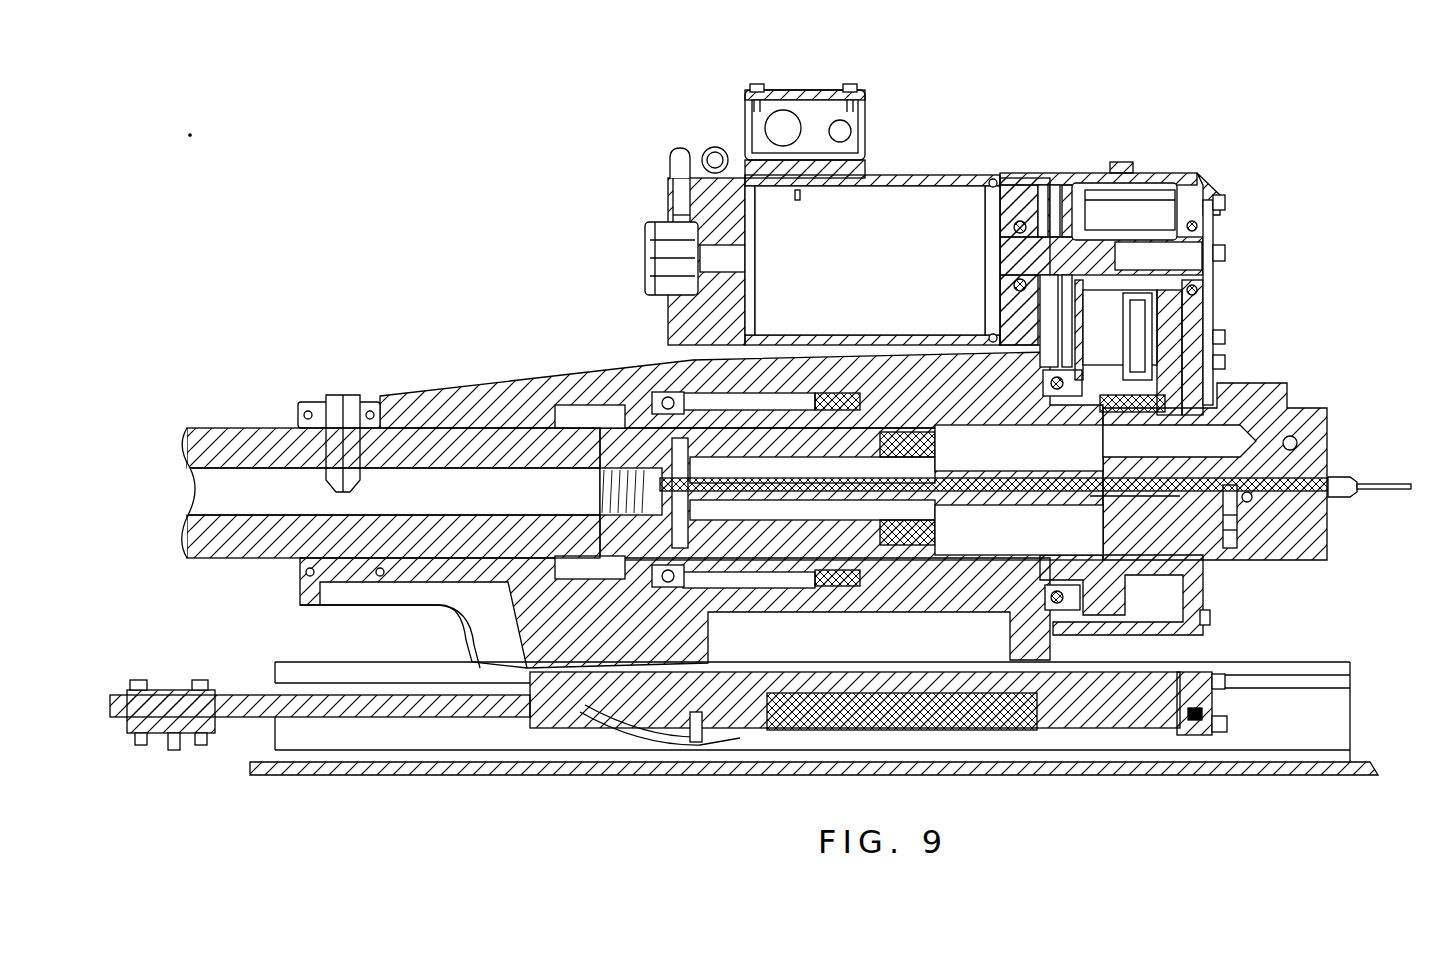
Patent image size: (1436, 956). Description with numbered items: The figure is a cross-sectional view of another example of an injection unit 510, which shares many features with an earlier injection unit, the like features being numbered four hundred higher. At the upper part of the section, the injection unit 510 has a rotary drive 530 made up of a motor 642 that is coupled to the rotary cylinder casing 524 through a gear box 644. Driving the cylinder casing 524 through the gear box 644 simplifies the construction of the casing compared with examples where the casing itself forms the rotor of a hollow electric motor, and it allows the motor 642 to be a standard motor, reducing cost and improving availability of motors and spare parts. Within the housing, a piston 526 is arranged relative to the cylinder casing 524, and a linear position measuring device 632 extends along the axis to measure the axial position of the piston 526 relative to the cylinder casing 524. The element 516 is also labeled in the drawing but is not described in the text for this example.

The injection unit 510 is at (426, 170).
The tube 516 is at (222, 550).
The rotary cylinder casing 524 is at (980, 408).
The piston 526 is at (946, 529).
The rotary drive 530 is at (1132, 226).
The linear position measuring device 632 is at (1053, 488).
The motor 642 is at (888, 192).
The gear box 644 is at (1176, 203).